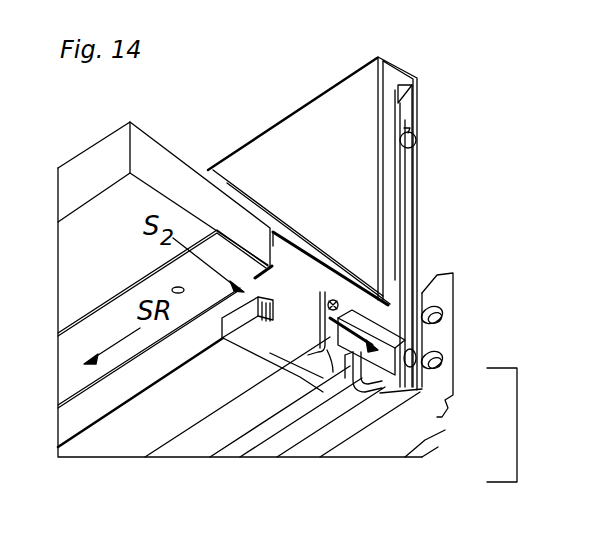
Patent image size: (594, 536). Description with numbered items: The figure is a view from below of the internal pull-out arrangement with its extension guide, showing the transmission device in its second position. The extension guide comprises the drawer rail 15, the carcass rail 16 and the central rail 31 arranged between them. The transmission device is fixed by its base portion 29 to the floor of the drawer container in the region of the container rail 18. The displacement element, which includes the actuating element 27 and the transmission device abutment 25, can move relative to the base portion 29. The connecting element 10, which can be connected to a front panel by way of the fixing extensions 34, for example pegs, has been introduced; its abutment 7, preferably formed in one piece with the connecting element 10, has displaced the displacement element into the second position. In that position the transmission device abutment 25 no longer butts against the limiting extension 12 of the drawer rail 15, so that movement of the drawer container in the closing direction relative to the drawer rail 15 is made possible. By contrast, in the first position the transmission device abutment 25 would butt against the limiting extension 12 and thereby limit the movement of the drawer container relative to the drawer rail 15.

The abutment 7 is at (383, 343).
The connecting element 10 is at (400, 310).
The limiting extension 12 is at (262, 327).
The drawer rail 15 is at (418, 438).
The carcass rail 16 is at (423, 415).
The container rail 18 is at (107, 410).
The transmission device abutment 25 is at (220, 340).
The actuating element 27 is at (237, 192).
The base portion 29 is at (385, 243).
The central rail 31 is at (422, 389).
The fixing extensions 34 is at (536, 425).